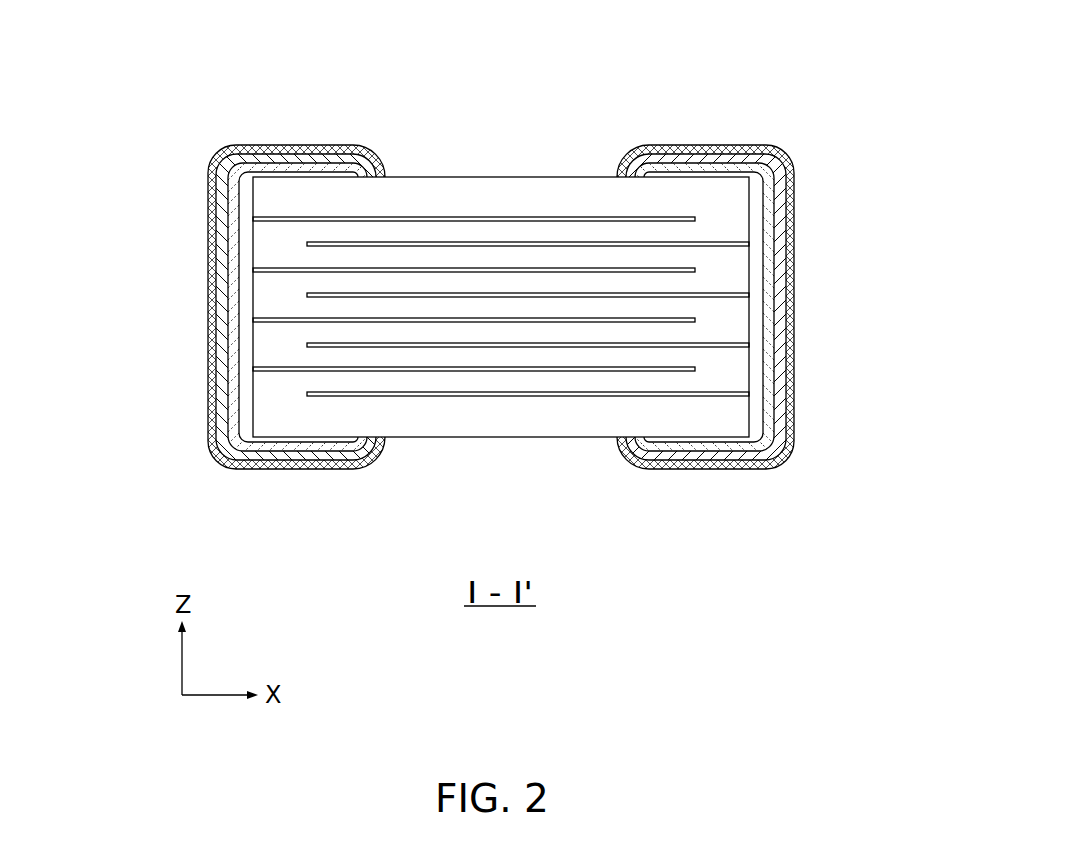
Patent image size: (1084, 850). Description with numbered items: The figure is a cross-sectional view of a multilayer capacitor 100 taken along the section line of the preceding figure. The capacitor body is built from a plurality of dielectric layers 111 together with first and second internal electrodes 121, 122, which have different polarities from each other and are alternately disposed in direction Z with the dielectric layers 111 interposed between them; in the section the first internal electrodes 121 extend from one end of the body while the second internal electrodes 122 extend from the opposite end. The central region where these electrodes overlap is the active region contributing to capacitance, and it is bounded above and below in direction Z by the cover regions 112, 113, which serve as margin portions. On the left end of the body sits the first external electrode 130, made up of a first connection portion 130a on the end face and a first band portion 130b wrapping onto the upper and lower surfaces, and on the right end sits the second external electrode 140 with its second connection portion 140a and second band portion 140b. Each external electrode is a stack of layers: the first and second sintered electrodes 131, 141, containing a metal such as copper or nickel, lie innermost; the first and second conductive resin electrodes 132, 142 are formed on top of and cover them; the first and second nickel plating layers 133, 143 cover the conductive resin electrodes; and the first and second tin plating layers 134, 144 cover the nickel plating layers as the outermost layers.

The multilayer capacitor 100 is at (526, 36).
The dielectric layers 111 is at (559, 310).
The cover region 112 is at (532, 190).
The cover region 113 is at (530, 428).
The first internal electrode 121 is at (420, 216).
The second internal electrode 122 is at (477, 241).
The first external electrode 130 is at (227, 310).
The first connection portion 130a is at (198, 213).
The first band portion 130b is at (279, 137).
The first sintered electrode 131 is at (243, 302).
The first conductive resin electrode 132 is at (230, 342).
The first nickel plating layer 133 is at (222, 380).
The first tin plating layer 134 is at (213, 423).
The second external electrode 140 is at (773, 310).
The second connection portion 140a is at (805, 213).
The second band portion 140b is at (722, 137).
The second sintered electrode 141 is at (755, 302).
The second conductive resin electrode 142 is at (770, 343).
The second nickel plating layer 143 is at (778, 382).
The second tin plating layer 144 is at (792, 427).